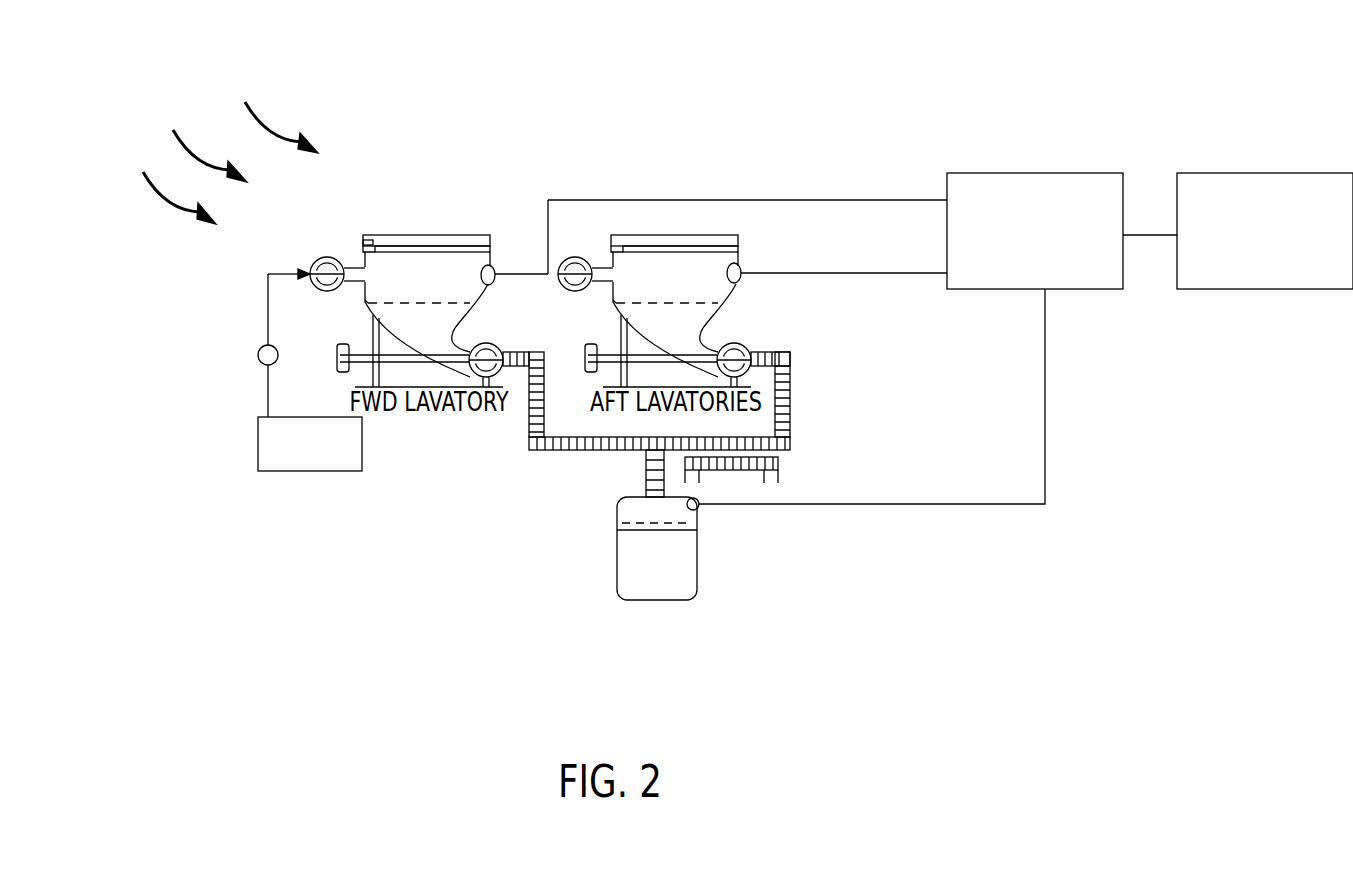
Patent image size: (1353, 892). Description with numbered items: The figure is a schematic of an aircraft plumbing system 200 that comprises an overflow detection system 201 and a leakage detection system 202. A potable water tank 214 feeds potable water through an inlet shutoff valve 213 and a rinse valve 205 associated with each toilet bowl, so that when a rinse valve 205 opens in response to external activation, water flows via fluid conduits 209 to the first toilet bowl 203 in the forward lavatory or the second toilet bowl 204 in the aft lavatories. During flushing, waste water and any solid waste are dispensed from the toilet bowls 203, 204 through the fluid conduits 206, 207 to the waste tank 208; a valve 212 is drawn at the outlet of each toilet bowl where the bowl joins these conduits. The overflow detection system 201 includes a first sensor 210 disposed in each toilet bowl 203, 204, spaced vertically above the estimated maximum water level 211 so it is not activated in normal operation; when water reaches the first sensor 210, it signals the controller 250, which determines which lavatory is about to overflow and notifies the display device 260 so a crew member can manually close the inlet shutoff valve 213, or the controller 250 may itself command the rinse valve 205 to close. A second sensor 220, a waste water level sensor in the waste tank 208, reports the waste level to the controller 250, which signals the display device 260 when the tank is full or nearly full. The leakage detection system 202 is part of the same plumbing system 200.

The plumbing system 200 is at (194, 140).
The overflow detection system 201 is at (164, 182).
The leakage detection system 202 is at (265, 112).
The toilet bowl 203 is at (420, 311).
The toilet bowl 204 is at (668, 311).
The rinse valve 205 is at (327, 257).
The fluid conduit 206 is at (542, 452).
The fluid conduit 207 is at (791, 383).
The waste tank 208 is at (618, 590).
The fluid conduit 209 is at (368, 252).
The first sensor 210 is at (492, 264).
The estimated maximum water level 211 is at (365, 300).
The flush valve 212 is at (496, 342).
The inlet shutoff valve 213 is at (257, 355).
The potable water tank 214 is at (258, 458).
The second sensor 220 is at (700, 510).
The controller 250 is at (1062, 231).
The display device 260 is at (1265, 231).